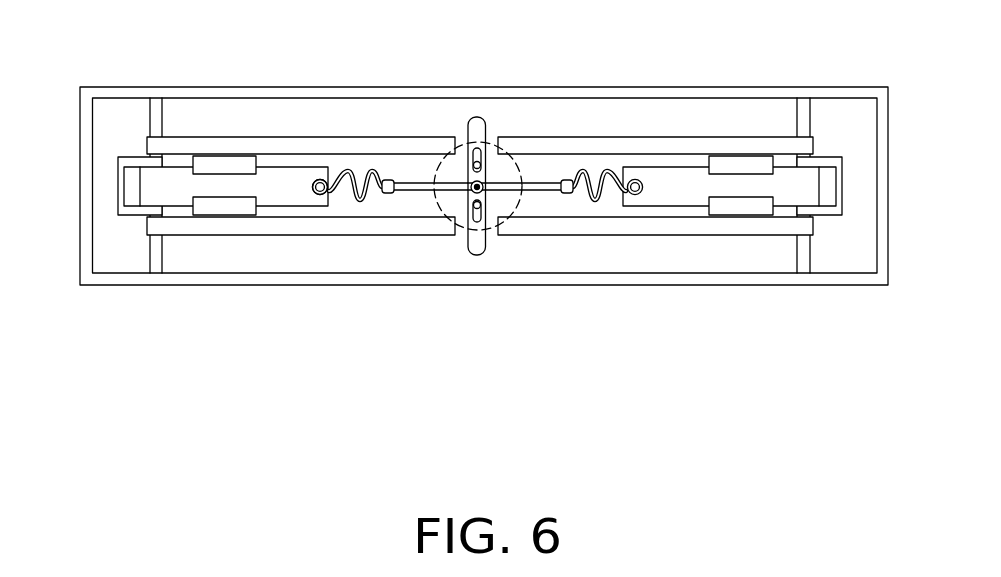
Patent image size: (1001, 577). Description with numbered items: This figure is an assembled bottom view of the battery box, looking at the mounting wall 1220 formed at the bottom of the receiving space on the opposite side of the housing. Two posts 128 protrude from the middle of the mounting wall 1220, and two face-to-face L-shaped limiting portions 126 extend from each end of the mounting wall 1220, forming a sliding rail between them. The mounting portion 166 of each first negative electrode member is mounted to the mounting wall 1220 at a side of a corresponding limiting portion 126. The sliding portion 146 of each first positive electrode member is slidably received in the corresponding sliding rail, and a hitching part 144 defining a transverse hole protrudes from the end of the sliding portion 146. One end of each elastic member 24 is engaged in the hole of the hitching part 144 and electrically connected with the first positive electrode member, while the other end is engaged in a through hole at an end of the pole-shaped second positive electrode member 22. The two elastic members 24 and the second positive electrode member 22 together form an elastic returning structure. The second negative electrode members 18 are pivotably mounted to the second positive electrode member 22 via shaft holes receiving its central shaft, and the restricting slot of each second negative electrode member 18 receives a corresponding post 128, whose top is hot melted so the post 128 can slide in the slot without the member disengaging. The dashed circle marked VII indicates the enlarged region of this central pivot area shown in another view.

The second negative electrode member 18 is at (481, 117).
The second positive electrode member 22 is at (418, 190).
The elastic member 24 is at (607, 180).
The limiting portion 126 is at (743, 163).
The post 128 is at (483, 163).
The hitching part 144 is at (318, 172).
The sliding portion 146 is at (167, 182).
The mounting portion 166 is at (427, 147).
The mounting wall 1220 is at (767, 252).
The section view indicator VII is at (433, 172).